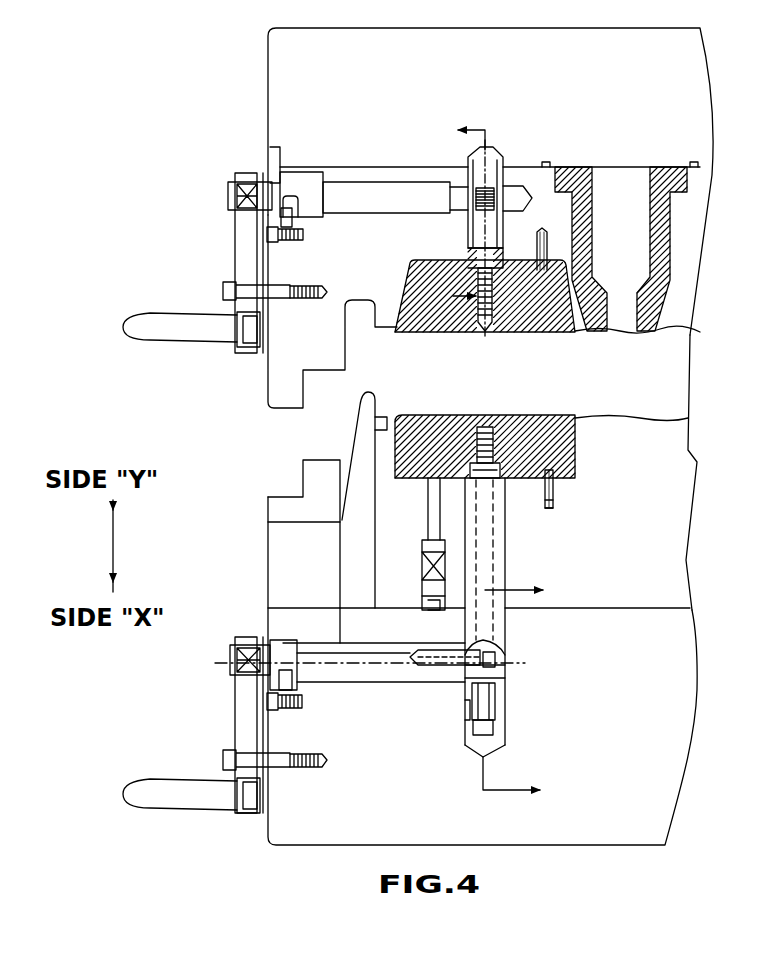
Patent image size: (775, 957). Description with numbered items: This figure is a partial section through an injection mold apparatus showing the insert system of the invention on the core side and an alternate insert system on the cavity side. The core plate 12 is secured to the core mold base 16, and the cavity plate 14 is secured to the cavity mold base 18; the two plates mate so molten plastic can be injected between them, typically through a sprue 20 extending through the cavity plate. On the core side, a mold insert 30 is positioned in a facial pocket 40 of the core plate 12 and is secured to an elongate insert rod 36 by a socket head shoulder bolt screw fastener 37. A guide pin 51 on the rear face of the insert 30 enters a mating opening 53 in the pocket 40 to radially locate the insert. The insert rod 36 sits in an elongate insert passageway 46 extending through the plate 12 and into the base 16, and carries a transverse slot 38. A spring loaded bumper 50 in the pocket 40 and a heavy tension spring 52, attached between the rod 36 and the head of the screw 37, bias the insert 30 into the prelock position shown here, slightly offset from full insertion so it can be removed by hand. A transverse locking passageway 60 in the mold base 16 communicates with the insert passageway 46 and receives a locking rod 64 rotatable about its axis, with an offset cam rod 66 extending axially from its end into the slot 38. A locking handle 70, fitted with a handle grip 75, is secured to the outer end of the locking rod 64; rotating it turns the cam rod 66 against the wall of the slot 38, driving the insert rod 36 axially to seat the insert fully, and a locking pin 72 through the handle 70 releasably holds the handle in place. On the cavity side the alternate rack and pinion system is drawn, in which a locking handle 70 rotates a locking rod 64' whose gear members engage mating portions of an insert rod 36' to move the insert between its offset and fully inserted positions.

The core plate 12 is at (370, 470).
The cavity plate 14 is at (298, 354).
The core mold base 16 is at (282, 832).
The cavity mold base 18 is at (282, 72).
The sprue 20 is at (628, 182).
The mold insert 30 is at (432, 326).
The insert rod 36 is at (556, 616).
The insert rod 36' is at (434, 228).
The socket head shoulder bolt screw fastener 37 is at (490, 725).
The transverse slot 38 is at (490, 643).
The facial pocket 40 is at (548, 482).
The elongate insert passageway 46 is at (505, 698).
The spring loaded bumper 50 is at (428, 518).
The guide pin 51 is at (552, 502).
The heavy tension spring 52 is at (466, 710).
The mating opening 53 is at (548, 512).
The transverse locking passageway 60 is at (360, 647).
The locking rod 64 is at (373, 632).
The locking rod 64' is at (406, 154).
The offset cam rod 66 is at (420, 668).
The locking handle 70 is at (240, 348).
The locking pin 72 is at (230, 284).
The handle grip 75 is at (135, 327).